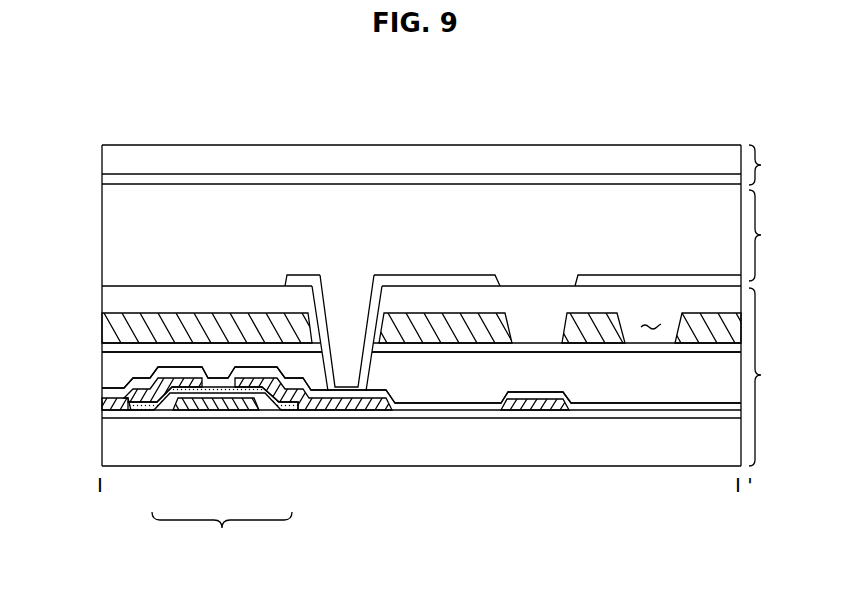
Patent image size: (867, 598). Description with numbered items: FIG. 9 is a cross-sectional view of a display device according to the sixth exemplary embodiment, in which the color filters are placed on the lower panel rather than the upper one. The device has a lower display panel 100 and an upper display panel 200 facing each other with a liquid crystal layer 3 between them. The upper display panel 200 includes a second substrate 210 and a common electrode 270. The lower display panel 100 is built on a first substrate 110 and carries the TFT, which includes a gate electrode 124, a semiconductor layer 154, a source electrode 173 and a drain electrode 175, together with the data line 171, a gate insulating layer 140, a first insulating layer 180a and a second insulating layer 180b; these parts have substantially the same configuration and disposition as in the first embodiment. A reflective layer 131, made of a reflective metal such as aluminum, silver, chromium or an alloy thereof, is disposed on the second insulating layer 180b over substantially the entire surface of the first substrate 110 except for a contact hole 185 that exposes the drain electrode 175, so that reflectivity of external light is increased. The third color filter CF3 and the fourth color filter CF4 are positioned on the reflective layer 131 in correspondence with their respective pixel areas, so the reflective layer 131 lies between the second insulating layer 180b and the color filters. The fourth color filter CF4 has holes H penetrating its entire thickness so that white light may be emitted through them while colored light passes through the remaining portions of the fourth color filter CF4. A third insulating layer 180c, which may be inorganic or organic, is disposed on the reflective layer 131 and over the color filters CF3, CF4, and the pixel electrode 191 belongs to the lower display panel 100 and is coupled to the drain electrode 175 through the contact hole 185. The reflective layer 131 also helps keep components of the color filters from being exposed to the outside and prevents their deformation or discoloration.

The upper display panel 200 is at (453, 215).
The second substrate 210 is at (208, 162).
The common electrode 270 is at (398, 182).
The liquid crystal layer 3 is at (769, 235).
The lower display panel 100 is at (778, 377).
The first substrate 110 is at (395, 455).
The gate insulating layer 140 is at (432, 412).
The first insulating layer 180a is at (470, 405).
The second insulating layer 180b is at (606, 385).
The third insulating layer 180c is at (530, 300).
The reflective layer 131 is at (665, 348).
The data line 171 is at (113, 404).
The source electrode 173 is at (190, 380).
The semiconductor layer 154 is at (230, 392).
The gate electrode 124 is at (213, 404).
The drain electrode 175 is at (250, 383).
The thin film transistor TFT is at (222, 536).
The third color filter CF3 is at (460, 318).
The fourth color filter CF4 is at (592, 318).
The hole H is at (650, 322).
The pixel electrode 191 is at (430, 278).
The contact hole 185 is at (351, 299).